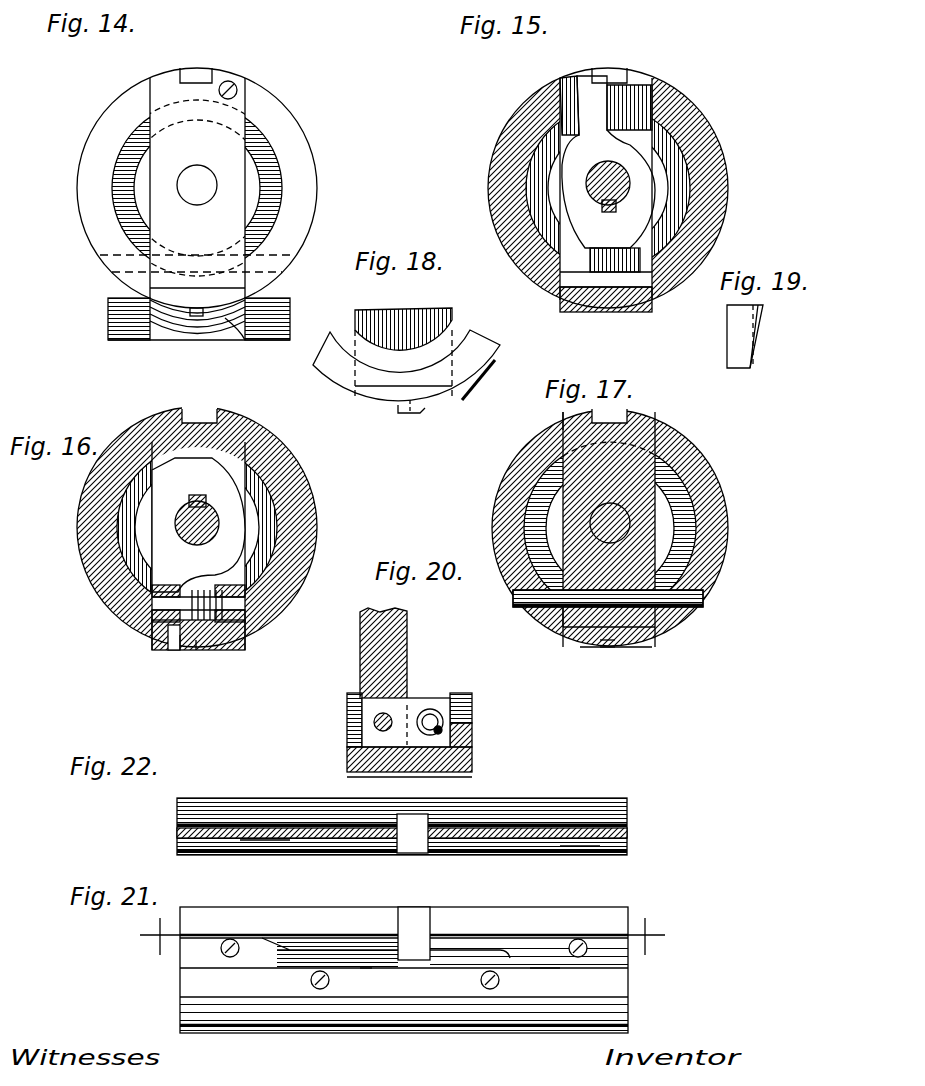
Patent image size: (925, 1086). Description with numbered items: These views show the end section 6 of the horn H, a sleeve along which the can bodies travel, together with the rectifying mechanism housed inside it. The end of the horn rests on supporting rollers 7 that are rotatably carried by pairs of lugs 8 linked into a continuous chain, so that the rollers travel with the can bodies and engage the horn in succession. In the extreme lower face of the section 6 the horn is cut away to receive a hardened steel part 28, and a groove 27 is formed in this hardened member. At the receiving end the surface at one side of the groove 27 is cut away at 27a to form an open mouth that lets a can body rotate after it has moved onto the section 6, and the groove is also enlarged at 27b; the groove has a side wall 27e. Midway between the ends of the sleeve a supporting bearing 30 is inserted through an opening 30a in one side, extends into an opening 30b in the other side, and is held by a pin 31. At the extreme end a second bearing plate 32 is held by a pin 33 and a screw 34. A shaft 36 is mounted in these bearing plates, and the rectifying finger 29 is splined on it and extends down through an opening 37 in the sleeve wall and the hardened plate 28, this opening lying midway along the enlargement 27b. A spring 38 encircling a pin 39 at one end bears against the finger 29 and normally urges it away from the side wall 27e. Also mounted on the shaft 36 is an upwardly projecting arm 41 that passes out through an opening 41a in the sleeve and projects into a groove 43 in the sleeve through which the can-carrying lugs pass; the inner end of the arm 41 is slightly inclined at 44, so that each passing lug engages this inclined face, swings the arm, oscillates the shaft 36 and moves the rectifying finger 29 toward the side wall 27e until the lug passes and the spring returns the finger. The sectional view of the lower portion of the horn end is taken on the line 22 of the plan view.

In FIG. 14, the horn section 6 is at (303, 212).
In FIG. 15, the horn section 6 is at (712, 220).
In FIG. 18, the horn section 6 is at (480, 350).
In FIG. 17, the horn section 6 is at (683, 447).
In FIG. 16, the horn section 6 is at (250, 440).
In FIG. 20, the horn section 6 is at (474, 762).
In FIG. 22, the horn section 6 is at (582, 807).
In FIG. 21, the horn section 6 is at (615, 1015).
In FIG. 14, the supporting rollers 7 is at (237, 326).
In FIG. 14, the lugs 8 is at (115, 325).
In FIG. 21, the section line 22 is at (402, 936).
In FIG. 14, the groove 27 is at (195, 315).
In FIG. 18, the groove 27 is at (405, 413).
In FIG. 17, the groove 27 is at (605, 650).
In FIG. 16, the groove 27 is at (190, 652).
In FIG. 22, the groove 27 is at (582, 856).
In FIG. 21, the groove 27 is at (545, 968).
In FIG. 17, the cut-away surface 27a is at (618, 648).
In FIG. 22, the cut-away surface 27a is at (262, 842).
In FIG. 21, the cut-away surface 27a is at (280, 940).
In FIG. 21, the groove enlargement 27b is at (460, 952).
In FIG. 16, the side wall of groove 27e is at (200, 652).
In FIG. 21, the side wall of groove 27e is at (365, 968).
In FIG. 14, the hardened steel part 28 is at (220, 300).
In FIG. 15, the hardened steel part 28 is at (645, 296).
In FIG. 18, the hardened steel part 28 is at (378, 392).
In FIG. 17, the hardened steel part 28 is at (655, 642).
In FIG. 16, the hardened steel part 28 is at (232, 642).
In FIG. 20, the hardened steel part 28 is at (355, 762).
In FIG. 22, the hardened steel part 28 is at (628, 846).
In FIG. 21, the hardened steel part 28 is at (610, 950).
In FIG. 18, the rectifying finger 29 is at (415, 413).
In FIG. 16, the rectifying finger 29 is at (166, 636).
In FIG. 17, the supporting bearing 30 is at (640, 550).
In FIG. 20, the supporting bearing 30 is at (393, 650).
In FIG. 17, the opening 30a is at (560, 432).
In FIG. 17, the opening 30b is at (568, 618).
In FIG. 17, the pin 31 is at (705, 598).
In FIG. 20, the pin 31 is at (380, 726).
In FIG. 14, the second bearing plate 32 is at (197, 188).
In FIG. 14, the pin 33 is at (105, 270).
In FIG. 14, the screw 34 is at (233, 87).
In FIG. 21, the screw 34 is at (404, 964).
In FIG. 14, the shaft 36 is at (200, 196).
In FIG. 15, the shaft 36 is at (616, 183).
In FIG. 17, the shaft 36 is at (618, 522).
In FIG. 16, the shaft 36 is at (198, 525).
In FIG. 16, the opening 37 is at (185, 652).
In FIG. 22, the opening 37 is at (415, 836).
In FIG. 21, the opening 37 is at (412, 915).
In FIG. 16, the spring 38 is at (250, 588).
In FIG. 20, the spring 38 is at (445, 716).
In FIG. 16, the pin 39 is at (245, 612).
In FIG. 20, the pin 39 is at (441, 730).
In FIG. 15, the arm 41 is at (588, 113).
In FIG. 19, the arm 41 is at (727, 345).
In FIG. 15, the opening 41a is at (570, 82).
In FIG. 14, the groove 43 is at (200, 81).
In FIG. 15, the groove 43 is at (616, 82).
In FIG. 17, the groove 43 is at (615, 422).
In FIG. 16, the groove 43 is at (195, 418).
In FIG. 19, the inclined face 44 is at (752, 345).
In FIG. 14, the housing H is at (305, 175).
In FIG. 15, the housing H is at (690, 121).
In FIG. 16, the housing H is at (320, 527).